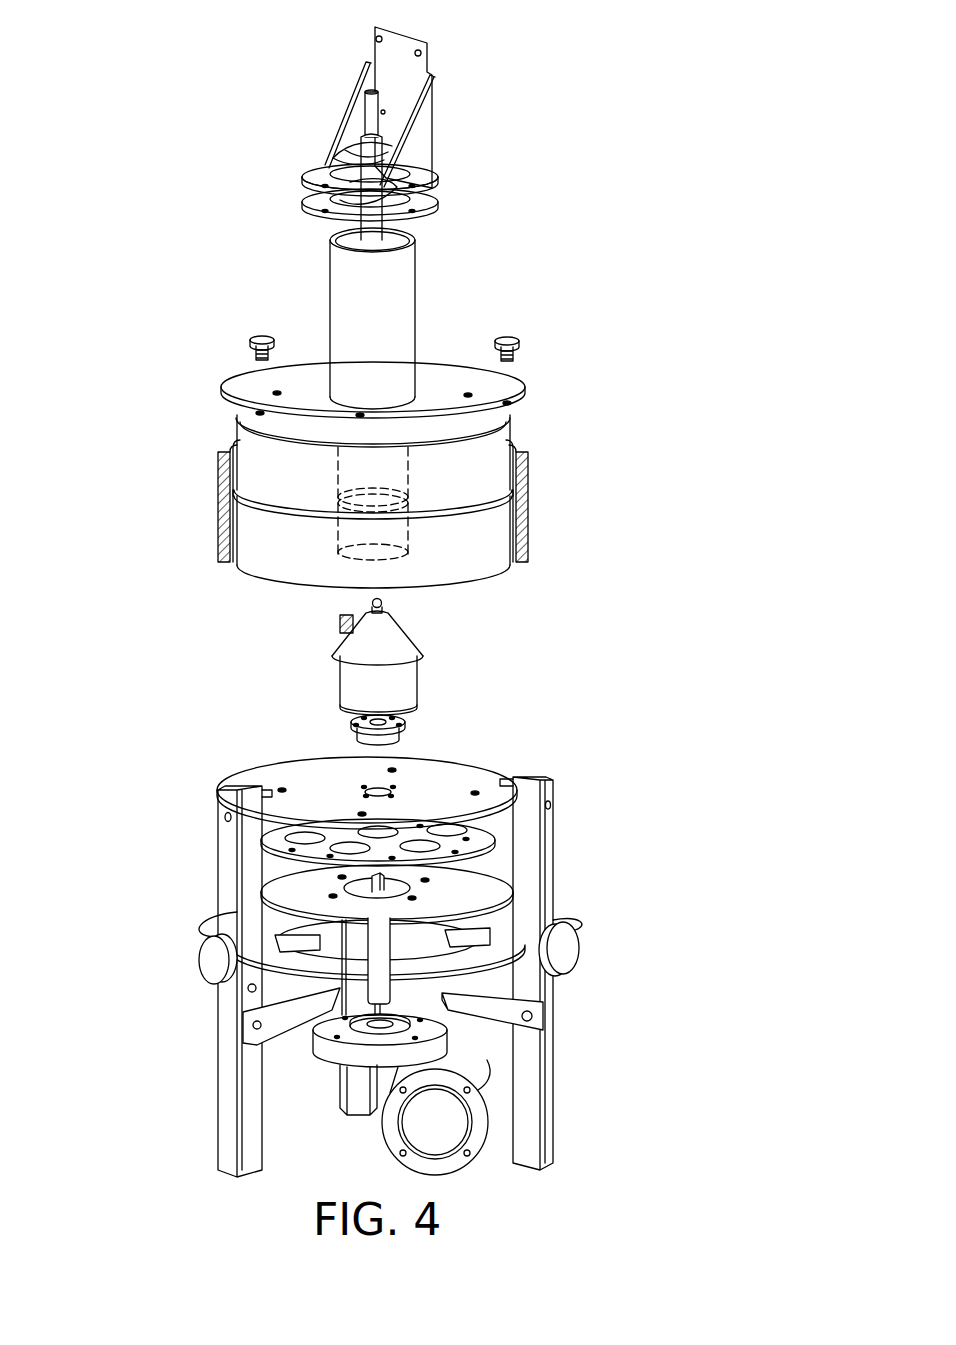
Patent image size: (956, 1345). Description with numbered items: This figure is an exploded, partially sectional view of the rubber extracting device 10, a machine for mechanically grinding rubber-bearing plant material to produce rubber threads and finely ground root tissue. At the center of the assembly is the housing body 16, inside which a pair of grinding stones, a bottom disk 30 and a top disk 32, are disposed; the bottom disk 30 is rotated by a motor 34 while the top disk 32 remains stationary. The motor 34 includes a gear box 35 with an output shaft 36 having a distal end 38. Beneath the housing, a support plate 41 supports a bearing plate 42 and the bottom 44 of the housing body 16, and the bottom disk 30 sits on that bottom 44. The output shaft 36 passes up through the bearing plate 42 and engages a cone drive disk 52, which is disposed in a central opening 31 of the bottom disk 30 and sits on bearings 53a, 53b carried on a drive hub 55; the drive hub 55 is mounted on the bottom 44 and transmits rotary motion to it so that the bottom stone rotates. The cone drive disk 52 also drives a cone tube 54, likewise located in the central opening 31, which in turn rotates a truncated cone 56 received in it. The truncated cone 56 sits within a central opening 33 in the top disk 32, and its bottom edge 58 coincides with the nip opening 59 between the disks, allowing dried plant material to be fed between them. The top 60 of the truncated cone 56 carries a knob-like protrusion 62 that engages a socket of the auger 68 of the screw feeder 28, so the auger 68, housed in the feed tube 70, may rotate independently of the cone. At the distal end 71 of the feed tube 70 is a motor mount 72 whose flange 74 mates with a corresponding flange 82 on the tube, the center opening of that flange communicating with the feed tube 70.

The rubber extracting device 10 is at (142, 326).
The housing body 16 is at (525, 500).
The screw feeder 28 is at (395, 307).
The bottom disk 30 is at (488, 540).
The central opening 31 is at (372, 537).
The top disk 32 is at (488, 462).
The central opening 33 is at (372, 472).
The motor 34 is at (450, 1127).
The gear box 35 is at (332, 1063).
The output shaft 36 is at (525, 936).
The distal end 38 is at (360, 877).
The support plate 41 is at (473, 893).
The bearing plate 42 is at (505, 831).
The bottom 44 is at (460, 775).
The cone drive disk 52 is at (338, 716).
The bearing 53a is at (353, 722).
The bearing 53b is at (402, 721).
The cone tube 54 is at (390, 680).
The drive hub 55 is at (425, 725).
The truncated cone 56 is at (383, 640).
The bottom edge 58 is at (423, 655).
The nip opening 59 is at (410, 500).
The top 60 is at (383, 604).
The protrusion 62 is at (372, 603).
The auger 68 is at (357, 146).
The feed tube 70 is at (330, 279).
The distal end 71 is at (383, 243).
The motor mount 72 is at (420, 130).
The flange 74 is at (440, 168).
The flange 82 is at (440, 204).